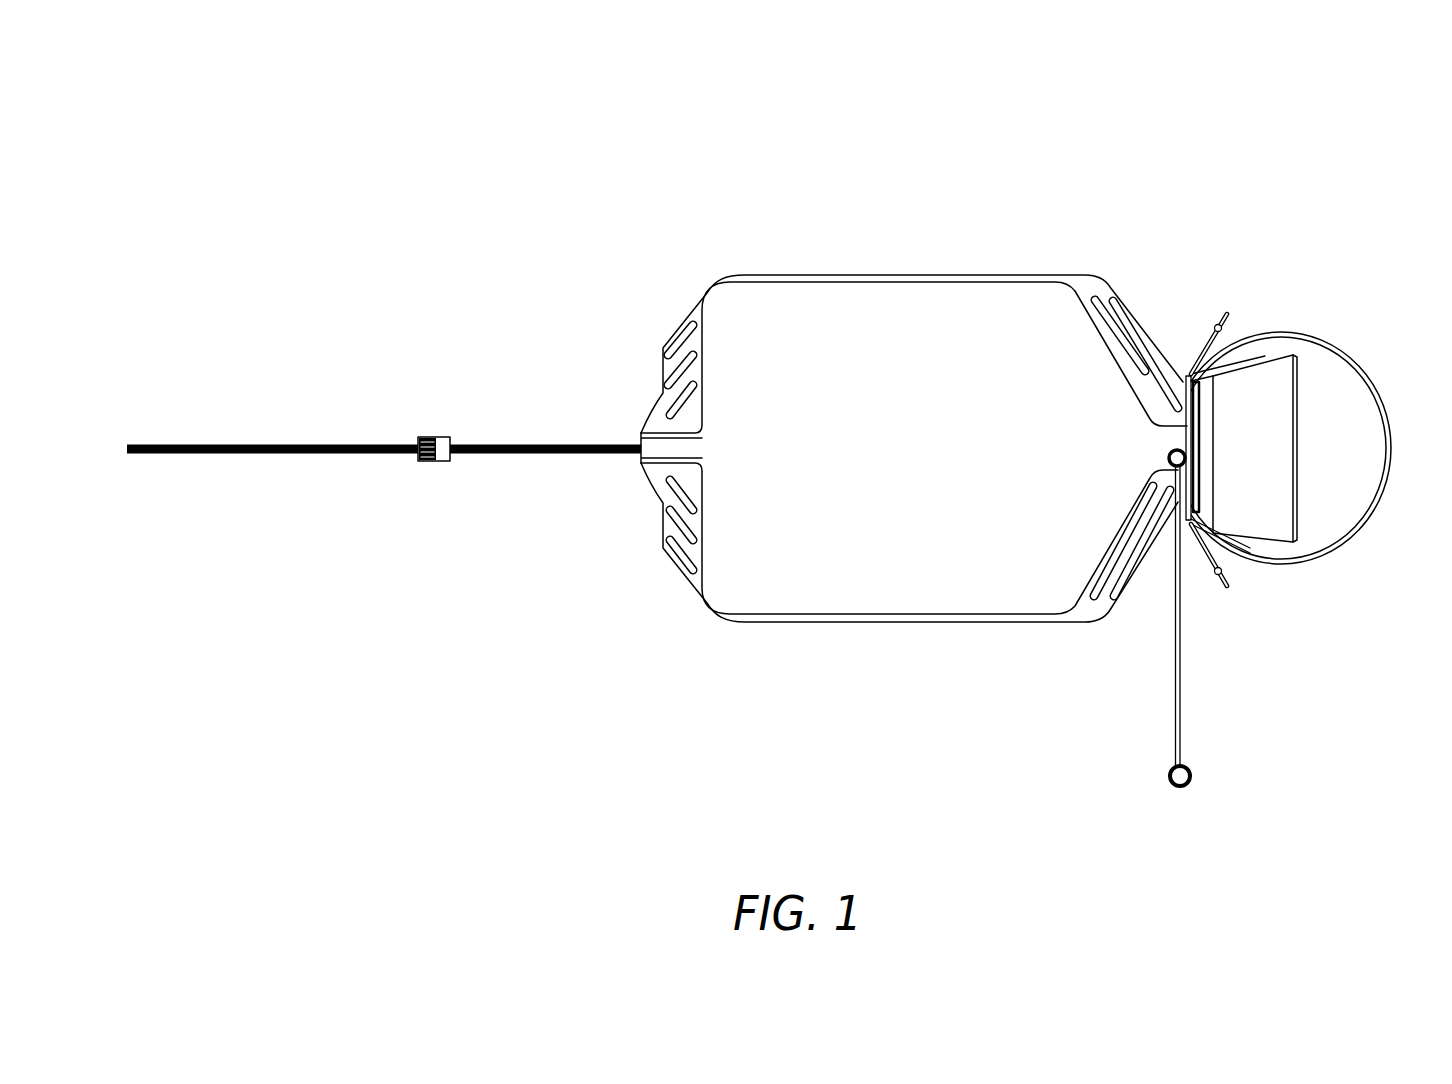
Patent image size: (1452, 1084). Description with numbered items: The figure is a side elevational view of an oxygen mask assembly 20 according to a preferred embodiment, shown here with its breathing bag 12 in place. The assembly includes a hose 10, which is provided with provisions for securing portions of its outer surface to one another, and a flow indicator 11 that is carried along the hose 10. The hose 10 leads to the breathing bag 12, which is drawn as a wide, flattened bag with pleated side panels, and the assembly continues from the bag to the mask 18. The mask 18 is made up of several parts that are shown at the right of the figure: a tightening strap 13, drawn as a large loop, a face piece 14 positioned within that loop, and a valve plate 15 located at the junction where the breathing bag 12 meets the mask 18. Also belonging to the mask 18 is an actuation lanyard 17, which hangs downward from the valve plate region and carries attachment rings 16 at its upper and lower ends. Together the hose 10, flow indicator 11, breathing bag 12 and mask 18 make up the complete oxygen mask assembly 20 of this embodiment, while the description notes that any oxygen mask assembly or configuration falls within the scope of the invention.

The hose 10 is at (284, 443).
The flow indicator 11 is at (440, 437).
The breathing bag 12 is at (807, 533).
The tightening strap 13 is at (1335, 343).
The face piece 14 is at (1273, 470).
The valve plate 15 is at (1198, 492).
The attachment rings 16 is at (1170, 452).
The actuation lanyard 17 is at (1177, 633).
The mask 18 is at (1318, 410).
The oxygen mask assembly 20 is at (1069, 182).